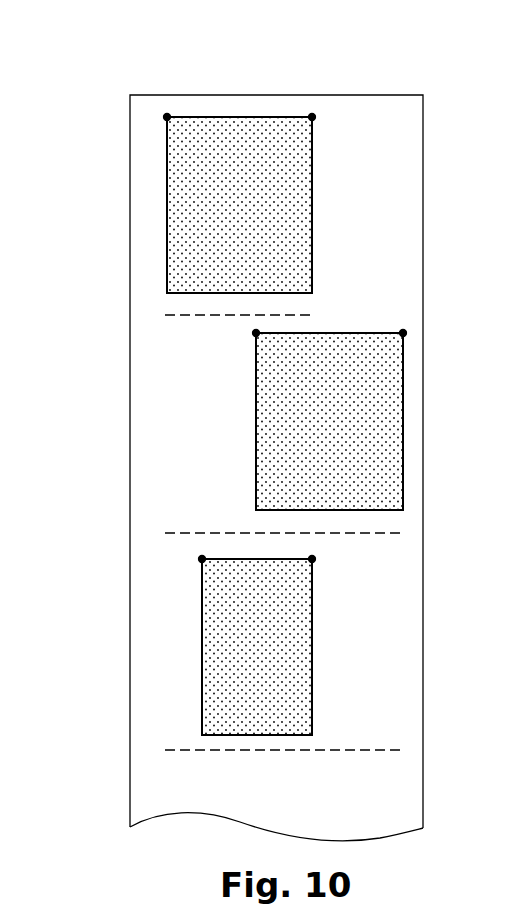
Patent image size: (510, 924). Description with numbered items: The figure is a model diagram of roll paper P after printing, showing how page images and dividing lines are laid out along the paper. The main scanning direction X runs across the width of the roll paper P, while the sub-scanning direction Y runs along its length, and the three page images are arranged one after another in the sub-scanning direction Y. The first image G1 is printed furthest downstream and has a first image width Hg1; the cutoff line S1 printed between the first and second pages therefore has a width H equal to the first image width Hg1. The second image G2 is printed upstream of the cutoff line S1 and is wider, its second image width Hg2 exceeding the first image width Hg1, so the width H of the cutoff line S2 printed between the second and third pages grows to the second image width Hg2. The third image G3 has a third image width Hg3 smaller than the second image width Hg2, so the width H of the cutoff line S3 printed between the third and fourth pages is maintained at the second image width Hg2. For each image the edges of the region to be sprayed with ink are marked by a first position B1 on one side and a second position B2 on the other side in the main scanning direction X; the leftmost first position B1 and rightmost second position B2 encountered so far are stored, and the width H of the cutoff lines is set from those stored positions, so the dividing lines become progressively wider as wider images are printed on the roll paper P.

The roll paper P is at (423, 141).
The first image G1 is at (312, 207).
The second image G2 is at (256, 482).
The third image G3 is at (312, 647).
The first position B1 is at (167, 117).
The second position B2 is at (312, 117).
The cutoff line S1 is at (180, 313).
The cutoff line S2 is at (180, 532).
The cutoff line S3 is at (180, 749).
The main scanning direction X is at (288, 25).
The sub-scanning direction Y is at (452, 276).
The width of the cutoff line H is at (300, 359).
The first image width Hg1 is at (313, 112).
The second image width Hg2 is at (391, 392).
The third image width Hg3 is at (300, 614).